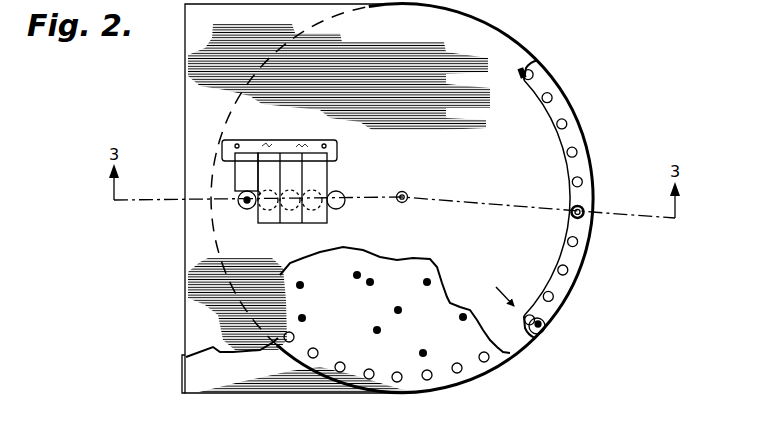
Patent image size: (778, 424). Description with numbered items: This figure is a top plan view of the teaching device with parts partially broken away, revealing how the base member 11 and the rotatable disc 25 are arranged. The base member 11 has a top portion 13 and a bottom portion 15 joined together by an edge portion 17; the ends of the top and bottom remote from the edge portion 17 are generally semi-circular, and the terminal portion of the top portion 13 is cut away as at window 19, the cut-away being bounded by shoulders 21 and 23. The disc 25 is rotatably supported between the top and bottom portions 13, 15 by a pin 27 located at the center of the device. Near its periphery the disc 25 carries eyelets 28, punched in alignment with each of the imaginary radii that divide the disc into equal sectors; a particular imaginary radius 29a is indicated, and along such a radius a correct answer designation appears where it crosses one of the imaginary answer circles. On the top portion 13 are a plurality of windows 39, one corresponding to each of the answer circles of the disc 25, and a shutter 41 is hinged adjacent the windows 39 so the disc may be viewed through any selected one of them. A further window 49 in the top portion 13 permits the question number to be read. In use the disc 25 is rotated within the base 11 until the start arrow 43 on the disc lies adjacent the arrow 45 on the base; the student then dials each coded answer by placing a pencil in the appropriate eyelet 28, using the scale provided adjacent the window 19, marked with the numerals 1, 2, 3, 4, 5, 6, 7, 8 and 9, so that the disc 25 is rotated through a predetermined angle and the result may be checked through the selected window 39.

The base member 11 is at (183, 250).
The top portion 13 is at (237, 354).
The bottom portion 15 is at (243, 393).
The edge portion 17 is at (184, 376).
The window 19 is at (570, 136).
The shoulder 21 is at (537, 62).
The shoulder 23 is at (530, 335).
The disc 25 is at (596, 172).
The pin 27 is at (406, 194).
The eyelets 28 is at (456, 374).
The imaginary radius 29a is at (357, 200).
The windows 39 is at (244, 208).
The shutter 41 is at (292, 226).
The start arrow 43 is at (546, 322).
The arrow 45 is at (518, 310).
The window 49 is at (341, 210).
The hole 1 is at (540, 288).
The hole 2 is at (552, 264).
The hole 3 is at (560, 238).
The hole 4 is at (565, 211).
The hole 5 is at (565, 184).
The hole 6 is at (560, 157).
The hole 7 is at (553, 130).
The hole 8 is at (540, 103).
The hole 9 is at (523, 84).